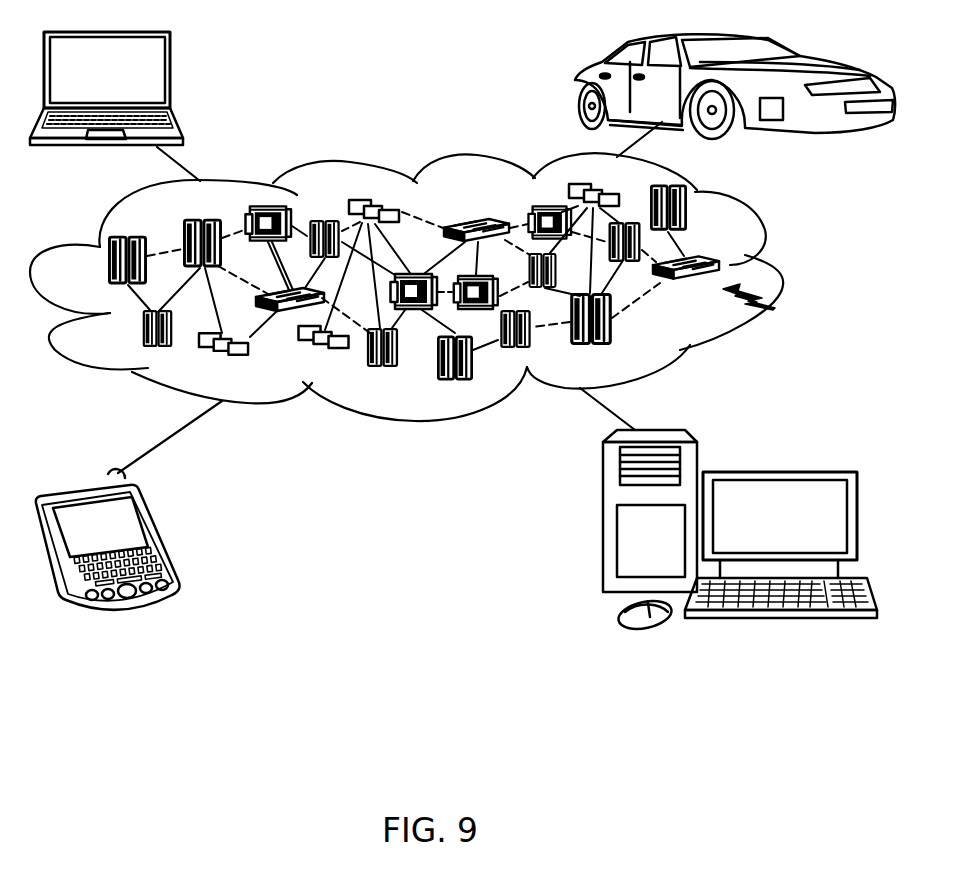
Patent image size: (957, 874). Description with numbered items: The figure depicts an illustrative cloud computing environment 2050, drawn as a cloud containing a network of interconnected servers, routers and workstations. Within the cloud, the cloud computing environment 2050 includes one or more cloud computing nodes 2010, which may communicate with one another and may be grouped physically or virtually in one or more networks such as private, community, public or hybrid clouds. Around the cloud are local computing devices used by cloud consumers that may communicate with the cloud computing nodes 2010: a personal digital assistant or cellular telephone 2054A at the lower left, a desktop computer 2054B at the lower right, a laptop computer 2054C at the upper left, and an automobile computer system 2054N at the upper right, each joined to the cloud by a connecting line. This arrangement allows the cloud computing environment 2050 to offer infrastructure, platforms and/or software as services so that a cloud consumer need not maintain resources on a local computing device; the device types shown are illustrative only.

The cloud computing environment 2050 is at (778, 270).
The cloud computing nodes 2010 is at (772, 308).
The personal digital assistant (PDA) or cellular telephone 2054A is at (160, 538).
The desktop computer 2054B is at (787, 456).
The laptop computer 2054C is at (171, 75).
The automobile computer system 2054N is at (575, 85).